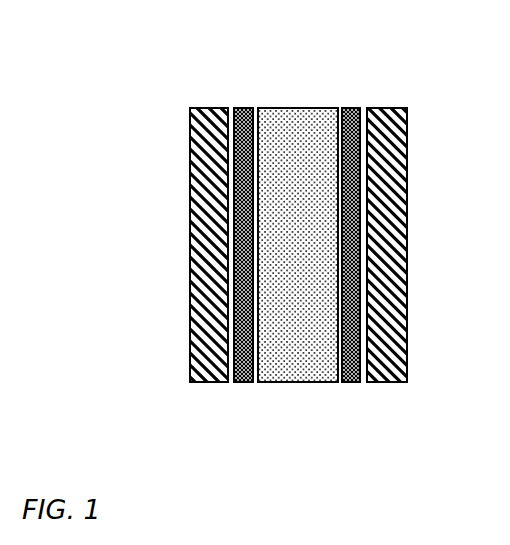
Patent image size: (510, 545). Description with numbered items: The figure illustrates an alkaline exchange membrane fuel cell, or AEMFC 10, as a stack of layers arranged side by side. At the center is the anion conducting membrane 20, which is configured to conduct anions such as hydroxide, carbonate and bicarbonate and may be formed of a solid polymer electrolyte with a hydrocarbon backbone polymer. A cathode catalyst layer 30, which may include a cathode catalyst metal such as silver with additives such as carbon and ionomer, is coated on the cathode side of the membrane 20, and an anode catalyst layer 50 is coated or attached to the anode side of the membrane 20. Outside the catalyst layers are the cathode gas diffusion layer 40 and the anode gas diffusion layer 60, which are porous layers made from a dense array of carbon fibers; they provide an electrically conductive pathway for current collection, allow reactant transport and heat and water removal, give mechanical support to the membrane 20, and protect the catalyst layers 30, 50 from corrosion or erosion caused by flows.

The alkaline exchange membrane fuel cell 10 is at (186, 80).
The anion conducting membrane 20 is at (322, 116).
The cathode catalyst layer 30 is at (348, 108).
The cathode gas diffusion layer 40 is at (400, 190).
The anode catalyst layer 50 is at (243, 108).
The anode gas diffusion layer 60 is at (189, 229).